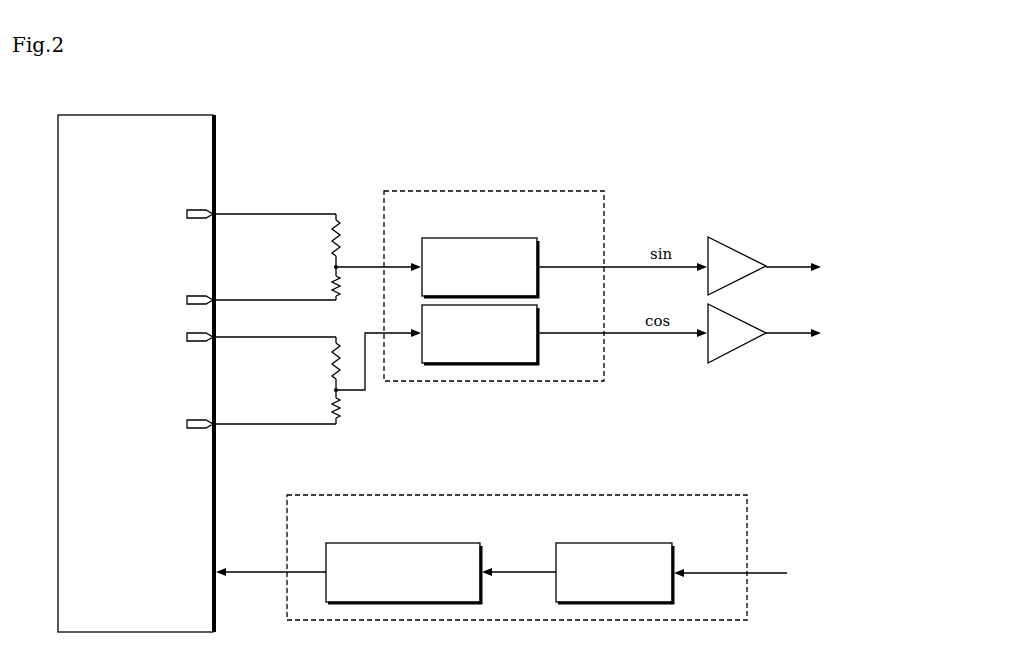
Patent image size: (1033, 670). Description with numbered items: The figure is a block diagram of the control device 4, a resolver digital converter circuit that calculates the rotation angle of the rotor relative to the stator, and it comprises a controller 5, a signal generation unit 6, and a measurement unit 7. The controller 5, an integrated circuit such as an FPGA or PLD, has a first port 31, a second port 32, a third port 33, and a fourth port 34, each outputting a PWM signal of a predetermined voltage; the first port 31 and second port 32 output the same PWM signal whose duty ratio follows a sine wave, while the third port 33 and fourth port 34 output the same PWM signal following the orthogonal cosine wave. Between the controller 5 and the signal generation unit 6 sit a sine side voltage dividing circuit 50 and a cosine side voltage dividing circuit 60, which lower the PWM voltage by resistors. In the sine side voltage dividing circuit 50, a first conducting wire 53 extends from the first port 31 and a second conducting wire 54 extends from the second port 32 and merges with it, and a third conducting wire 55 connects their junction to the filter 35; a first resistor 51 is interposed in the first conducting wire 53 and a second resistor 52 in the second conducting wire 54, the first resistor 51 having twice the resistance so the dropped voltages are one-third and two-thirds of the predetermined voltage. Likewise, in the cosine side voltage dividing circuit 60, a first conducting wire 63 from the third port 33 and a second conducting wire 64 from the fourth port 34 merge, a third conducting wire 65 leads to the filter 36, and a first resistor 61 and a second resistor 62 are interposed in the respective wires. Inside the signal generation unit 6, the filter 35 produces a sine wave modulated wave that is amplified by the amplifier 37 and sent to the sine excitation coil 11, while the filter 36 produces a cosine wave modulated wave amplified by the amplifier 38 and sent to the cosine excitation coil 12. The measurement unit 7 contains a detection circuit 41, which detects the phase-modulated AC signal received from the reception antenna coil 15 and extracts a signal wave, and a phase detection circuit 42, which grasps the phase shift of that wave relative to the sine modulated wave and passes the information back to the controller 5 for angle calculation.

The control device 4 is at (810, 138).
The controller 5 is at (216, 139).
The signal generation unit 6 is at (606, 210).
The measurement unit 7 is at (513, 495).
The sine excitation coil 11 is at (811, 268).
The cosine excitation coil 12 is at (811, 334).
The reception antenna coil 15 is at (749, 574).
The first port 31 is at (196, 208).
The second port 32 is at (196, 294).
The third port 33 is at (196, 345).
The fourth port 34 is at (196, 431).
The filter 35 is at (539, 241).
The filter 36 is at (539, 312).
The amplifier 37 is at (745, 252).
The amplifier 38 is at (745, 320).
The detection circuit 41 is at (674, 553).
The phase detection circuit 42 is at (482, 555).
The sine side voltage dividing circuit 50 is at (278, 222).
The first resistor 51 is at (322, 235).
The second resistor 52 is at (320, 282).
The first conducting wire 53 is at (248, 212).
The second conducting wire 54 is at (248, 298).
The third conducting wire 55 is at (360, 267).
The cosine side voltage dividing circuit 60 is at (295, 408).
The first resistor 61 is at (322, 360).
The second resistor 62 is at (320, 408).
The first conducting wire 63 is at (245, 338).
The second conducting wire 64 is at (245, 425).
The third conducting wire 65 is at (360, 390).